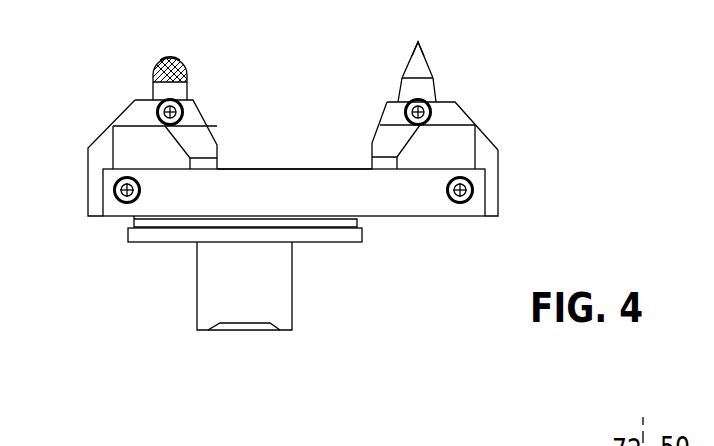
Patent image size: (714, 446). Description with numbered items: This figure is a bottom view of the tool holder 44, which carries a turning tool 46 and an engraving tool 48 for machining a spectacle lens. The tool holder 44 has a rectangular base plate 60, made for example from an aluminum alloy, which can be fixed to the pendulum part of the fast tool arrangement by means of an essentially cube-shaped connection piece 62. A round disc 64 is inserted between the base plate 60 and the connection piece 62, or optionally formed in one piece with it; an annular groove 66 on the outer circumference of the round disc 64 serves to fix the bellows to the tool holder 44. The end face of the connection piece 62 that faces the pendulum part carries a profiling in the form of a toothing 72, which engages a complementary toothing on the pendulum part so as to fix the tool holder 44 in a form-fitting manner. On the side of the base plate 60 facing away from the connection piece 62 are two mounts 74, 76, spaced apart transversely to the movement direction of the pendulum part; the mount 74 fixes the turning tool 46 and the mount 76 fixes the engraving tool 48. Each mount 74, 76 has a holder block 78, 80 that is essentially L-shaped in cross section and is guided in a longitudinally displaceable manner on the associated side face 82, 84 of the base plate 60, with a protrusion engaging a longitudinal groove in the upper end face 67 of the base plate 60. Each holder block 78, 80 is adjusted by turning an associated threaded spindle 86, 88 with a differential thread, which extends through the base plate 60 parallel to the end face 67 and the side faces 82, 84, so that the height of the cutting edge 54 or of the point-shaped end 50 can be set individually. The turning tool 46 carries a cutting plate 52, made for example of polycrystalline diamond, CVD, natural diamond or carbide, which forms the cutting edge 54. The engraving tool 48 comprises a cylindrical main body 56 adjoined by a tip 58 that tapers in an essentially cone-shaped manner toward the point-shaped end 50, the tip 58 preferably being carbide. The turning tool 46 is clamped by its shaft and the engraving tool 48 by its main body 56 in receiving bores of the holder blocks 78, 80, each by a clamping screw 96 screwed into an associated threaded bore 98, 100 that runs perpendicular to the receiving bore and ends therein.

The tool holder 44 is at (293, 190).
The turning tool 46 is at (166, 57).
The engraving tool 48 is at (422, 55).
The point-shaped end 50 is at (421, 42).
The cutting plate 52 is at (154, 72).
The cutting edge 54 is at (159, 37).
The cylindrical main body 56 is at (413, 88).
The tip 58 is at (417, 63).
The base plate 60 is at (295, 208).
The connection piece 62 is at (255, 288).
The round disc 64 is at (177, 242).
The annular groove 66 is at (132, 229).
The upper end face 67 is at (327, 169).
The toothing 72 is at (245, 328).
The mount 74 is at (100, 133).
The mount 76 is at (494, 136).
The holder block 78 is at (97, 158).
The holder block 80 is at (488, 182).
The side face 82 is at (100, 187).
The side face 84 is at (485, 197).
The threaded spindle 86 is at (142, 192).
The threaded spindle 88 is at (448, 190).
The clamping screw 96 is at (158, 107).
The threaded bore 98 is at (186, 112).
The threaded bore 100 is at (432, 108).